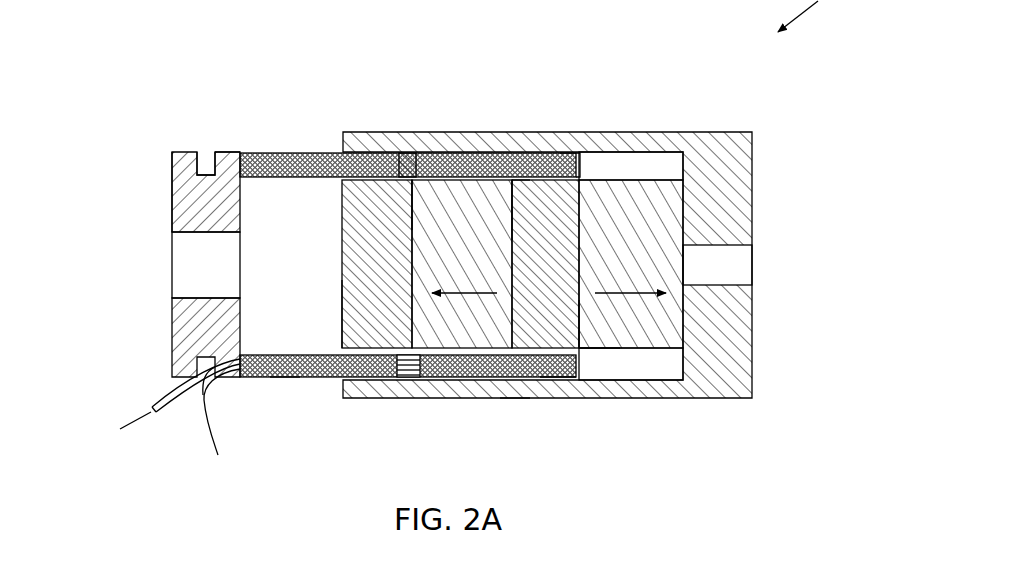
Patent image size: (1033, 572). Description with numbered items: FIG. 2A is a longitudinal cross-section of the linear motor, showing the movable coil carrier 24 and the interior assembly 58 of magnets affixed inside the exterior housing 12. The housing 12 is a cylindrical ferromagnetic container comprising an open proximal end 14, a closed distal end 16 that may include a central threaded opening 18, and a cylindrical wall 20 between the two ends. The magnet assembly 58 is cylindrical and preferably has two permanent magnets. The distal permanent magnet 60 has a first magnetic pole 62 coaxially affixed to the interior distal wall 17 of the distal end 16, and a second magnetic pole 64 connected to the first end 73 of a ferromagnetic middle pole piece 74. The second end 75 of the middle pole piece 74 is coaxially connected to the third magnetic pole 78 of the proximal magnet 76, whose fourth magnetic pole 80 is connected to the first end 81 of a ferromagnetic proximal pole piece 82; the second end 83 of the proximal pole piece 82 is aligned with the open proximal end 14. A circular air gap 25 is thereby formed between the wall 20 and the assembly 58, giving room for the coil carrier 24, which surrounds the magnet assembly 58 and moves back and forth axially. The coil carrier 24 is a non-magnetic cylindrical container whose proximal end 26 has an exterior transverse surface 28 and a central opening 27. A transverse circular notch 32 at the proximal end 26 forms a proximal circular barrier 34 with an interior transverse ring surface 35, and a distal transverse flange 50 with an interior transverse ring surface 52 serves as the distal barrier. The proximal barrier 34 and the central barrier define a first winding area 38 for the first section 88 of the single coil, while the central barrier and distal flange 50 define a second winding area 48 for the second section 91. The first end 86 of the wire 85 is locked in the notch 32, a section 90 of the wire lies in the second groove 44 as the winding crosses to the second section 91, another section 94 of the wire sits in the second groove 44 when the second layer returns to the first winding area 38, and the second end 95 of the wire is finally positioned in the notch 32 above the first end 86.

The exterior housing 12 is at (808, 134).
The open proximal end 14 is at (568, 232).
The closed distal end 16 is at (745, 366).
The distal wall 17 is at (677, 212).
The central threaded opening 18 is at (742, 262).
The cylindrical wall 20 is at (520, 140).
The movable coil carrier 24 is at (152, 215).
The circular air gap 25 is at (650, 165).
The proximal end 26 is at (165, 140).
The central opening 27 is at (192, 262).
The exterior transverse surface 28 is at (172, 195).
The transverse circular notch 32 is at (203, 155).
The proximal circular barrier 34 is at (222, 158).
The interior transverse ring surface 35 is at (245, 157).
The first winding area 38 is at (408, 414).
The second groove 44 is at (410, 378).
The second winding area 48 is at (557, 380).
The distal transverse flange 50 is at (580, 158).
The interior transverse ring surface 52 is at (565, 158).
The interior assembly of magnets 58 is at (437, 264).
The distal permanent magnet 60 is at (631, 264).
The first magnetic pole 62 is at (683, 318).
The second magnetic pole 64 is at (581, 338).
The first end 73 is at (580, 326).
The middle pole piece 74 is at (545, 264).
The second end 75 is at (514, 206).
The proximal magnet 76 is at (462, 264).
The third magnetic pole 78 is at (512, 218).
The fourth magnetic pole 80 is at (412, 206).
The first end 81 is at (412, 294).
The proximal pole piece 82 is at (377, 264).
The second end 83 is at (342, 314).
The wire 85 is at (203, 395).
The first end 86 is at (222, 428).
The first section 88 is at (283, 381).
The section of the wire 90 is at (398, 360).
The second section 91 is at (514, 386).
The section of the wire 94 is at (408, 366).
The second end 95 is at (157, 414).